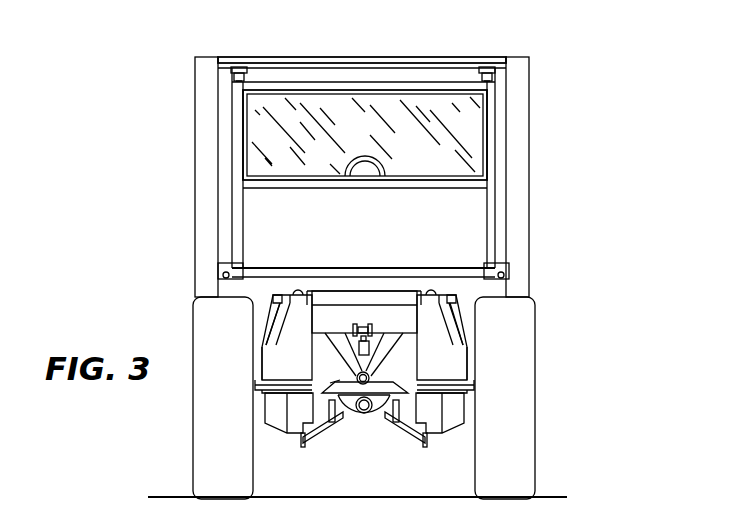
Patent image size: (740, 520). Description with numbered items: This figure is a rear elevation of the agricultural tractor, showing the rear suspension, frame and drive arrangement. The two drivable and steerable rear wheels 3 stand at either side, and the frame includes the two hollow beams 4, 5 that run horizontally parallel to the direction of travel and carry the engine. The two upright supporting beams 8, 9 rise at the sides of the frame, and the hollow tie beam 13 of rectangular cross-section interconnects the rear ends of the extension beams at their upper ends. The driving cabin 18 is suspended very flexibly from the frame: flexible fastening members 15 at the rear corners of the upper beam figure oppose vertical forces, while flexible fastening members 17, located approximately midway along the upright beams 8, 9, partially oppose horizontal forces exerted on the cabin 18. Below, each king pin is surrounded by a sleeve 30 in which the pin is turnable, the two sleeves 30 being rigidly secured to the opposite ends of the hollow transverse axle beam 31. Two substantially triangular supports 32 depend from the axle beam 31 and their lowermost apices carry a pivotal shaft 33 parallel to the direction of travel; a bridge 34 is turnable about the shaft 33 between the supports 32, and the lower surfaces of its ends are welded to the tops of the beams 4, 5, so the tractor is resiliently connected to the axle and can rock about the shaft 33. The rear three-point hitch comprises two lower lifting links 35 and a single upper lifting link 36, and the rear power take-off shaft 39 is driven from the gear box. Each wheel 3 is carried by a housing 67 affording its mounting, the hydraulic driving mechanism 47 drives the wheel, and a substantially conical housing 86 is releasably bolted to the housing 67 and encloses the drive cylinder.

The rear wheels 3 is at (200, 460).
The hollow beam 4 is at (332, 428).
The hollow beam 5 is at (382, 426).
The upright supporting beam 8 is at (195, 137).
The upright supporting beam 9 is at (524, 152).
The tie beam 13 is at (352, 58).
The fastening members 15 is at (240, 66).
The fastening members 17 is at (242, 268).
The driving cabin 18 is at (376, 212).
The sleeve 30 is at (273, 302).
The axle beam 31 is at (338, 291).
The triangular supports 32 is at (383, 346).
The pivotal shaft 33 is at (343, 345).
The bridge 34 is at (322, 380).
The lower lifting links 35 is at (304, 448).
The upper lifting link 36 is at (366, 324).
The rear power take-off shaft 39 is at (363, 438).
The driving mechanism 47 is at (250, 368).
The housing 67 is at (290, 430).
The conical housing 86 is at (268, 334).